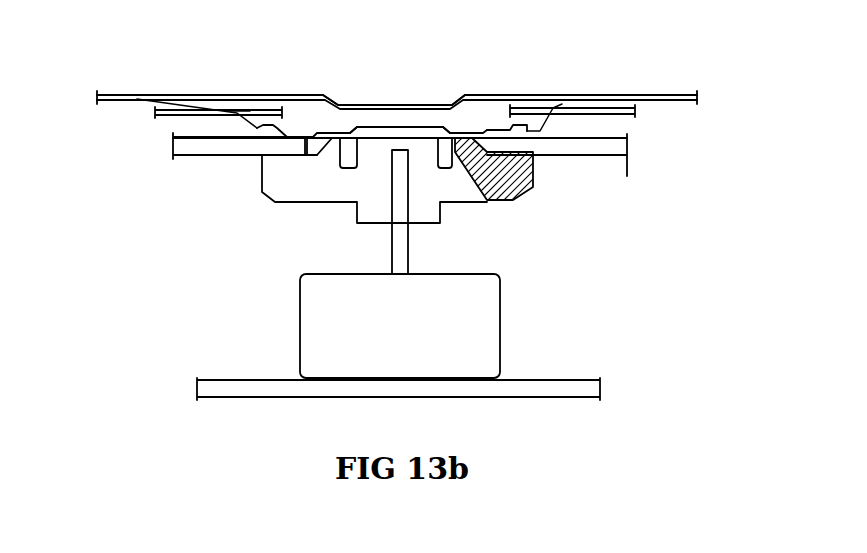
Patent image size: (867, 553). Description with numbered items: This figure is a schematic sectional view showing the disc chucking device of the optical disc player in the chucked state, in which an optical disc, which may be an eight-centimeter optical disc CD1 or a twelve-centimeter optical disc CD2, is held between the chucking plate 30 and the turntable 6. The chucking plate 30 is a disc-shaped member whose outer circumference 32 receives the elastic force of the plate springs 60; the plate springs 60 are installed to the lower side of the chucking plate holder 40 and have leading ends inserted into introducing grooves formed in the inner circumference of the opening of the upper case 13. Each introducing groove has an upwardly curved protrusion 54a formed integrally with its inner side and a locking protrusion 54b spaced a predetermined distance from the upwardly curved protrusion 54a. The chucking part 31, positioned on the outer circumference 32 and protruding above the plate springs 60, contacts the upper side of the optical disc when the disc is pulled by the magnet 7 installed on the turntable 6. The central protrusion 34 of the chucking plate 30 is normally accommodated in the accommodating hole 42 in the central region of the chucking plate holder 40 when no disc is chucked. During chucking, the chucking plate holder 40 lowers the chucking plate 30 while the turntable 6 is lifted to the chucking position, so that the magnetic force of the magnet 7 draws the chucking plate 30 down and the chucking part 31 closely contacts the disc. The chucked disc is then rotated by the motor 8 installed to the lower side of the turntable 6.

The turntable 6 is at (300, 195).
The magnet 7 is at (482, 200).
The motor 8 is at (473, 342).
The upper case 13 is at (190, 102).
The chucking plate 30 is at (396, 120).
The chucking part 31 is at (292, 135).
The outer circumference 32 is at (533, 140).
The central protrusion 34 is at (415, 126).
The chucking plate holder 40 is at (670, 96).
The accommodating hole 42 is at (343, 97).
The upwardly curved protrusion 54a is at (237, 110).
The locking protrusion 54b is at (237, 105).
The plate spring 60 is at (143, 101).
The 8 cm optical disc CD1 is at (578, 148).
The 12 cm optical disc CD2 is at (245, 146).